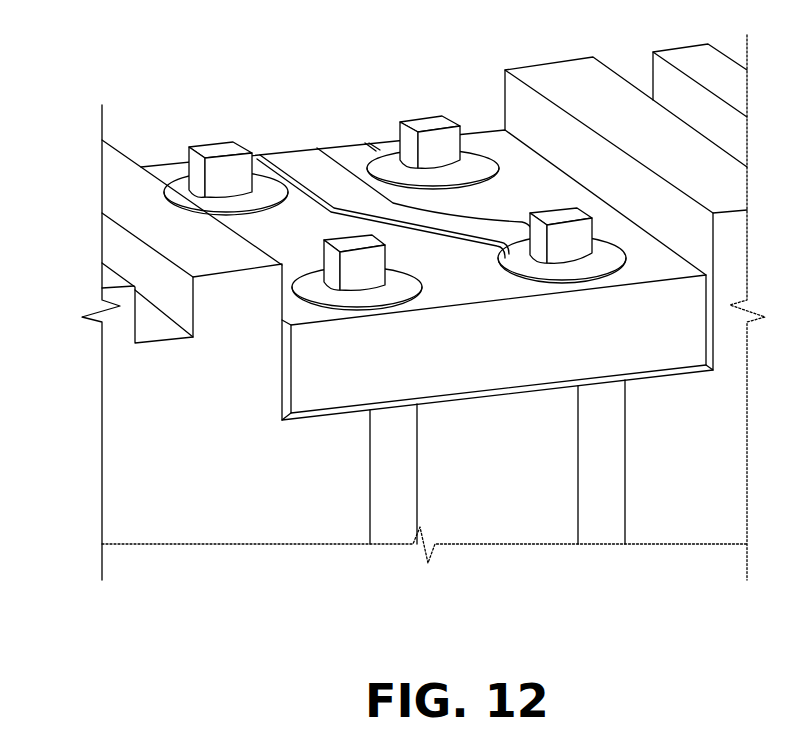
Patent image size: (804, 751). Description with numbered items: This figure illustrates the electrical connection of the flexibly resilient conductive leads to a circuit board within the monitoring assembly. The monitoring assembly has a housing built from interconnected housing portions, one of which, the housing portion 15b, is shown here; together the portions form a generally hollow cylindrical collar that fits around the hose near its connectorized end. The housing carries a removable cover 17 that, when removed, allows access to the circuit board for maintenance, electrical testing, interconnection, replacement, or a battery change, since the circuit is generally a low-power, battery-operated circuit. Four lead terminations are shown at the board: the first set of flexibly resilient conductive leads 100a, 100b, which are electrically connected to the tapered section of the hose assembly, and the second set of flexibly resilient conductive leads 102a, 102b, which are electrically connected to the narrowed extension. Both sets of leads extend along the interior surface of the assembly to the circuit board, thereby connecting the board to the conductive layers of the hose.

The housing portion 15b is at (117, 177).
The removable cover 17 is at (270, 150).
The flexibly resilient conductive lead 100a is at (425, 122).
The flexibly resilient conductive lead 100b is at (210, 152).
The flexibly resilient conductive lead 102a is at (550, 220).
The flexibly resilient conductive lead 102b is at (343, 243).